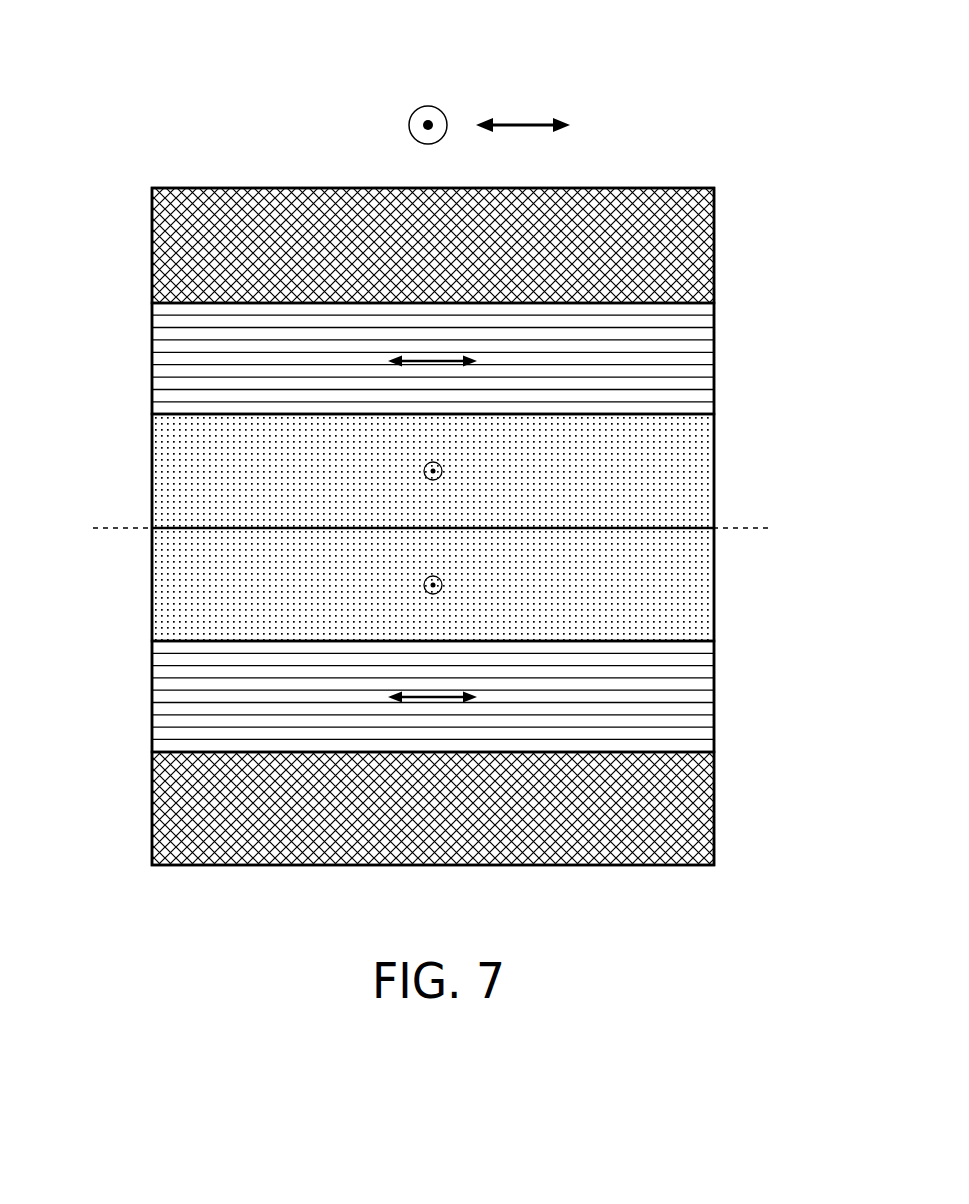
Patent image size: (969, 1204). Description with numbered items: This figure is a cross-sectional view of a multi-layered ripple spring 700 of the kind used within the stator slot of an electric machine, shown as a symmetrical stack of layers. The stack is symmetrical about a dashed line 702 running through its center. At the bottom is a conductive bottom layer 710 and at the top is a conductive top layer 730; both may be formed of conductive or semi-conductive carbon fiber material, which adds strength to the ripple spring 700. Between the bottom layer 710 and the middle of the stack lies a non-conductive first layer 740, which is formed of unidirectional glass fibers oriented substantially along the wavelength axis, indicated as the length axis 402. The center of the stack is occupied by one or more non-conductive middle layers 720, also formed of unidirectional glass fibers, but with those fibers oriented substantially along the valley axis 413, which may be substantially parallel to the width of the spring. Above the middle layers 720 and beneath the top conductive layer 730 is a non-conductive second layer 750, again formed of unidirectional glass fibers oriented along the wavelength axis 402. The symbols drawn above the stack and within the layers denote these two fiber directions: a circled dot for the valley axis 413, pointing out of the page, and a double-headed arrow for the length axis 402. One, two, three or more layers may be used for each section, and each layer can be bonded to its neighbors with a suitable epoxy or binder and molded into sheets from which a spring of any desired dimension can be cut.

The ripple spring 700 is at (683, 113).
The conductive top layer 730 is at (714, 257).
The second layer 750 is at (152, 362).
The middle layers 720 is at (714, 482).
The dashed line 702 is at (105, 528).
The first layer 740 is at (152, 698).
The conductive bottom layer 710 is at (714, 820).
The valley axis 413 is at (409, 124).
The length axis 402 is at (527, 124).